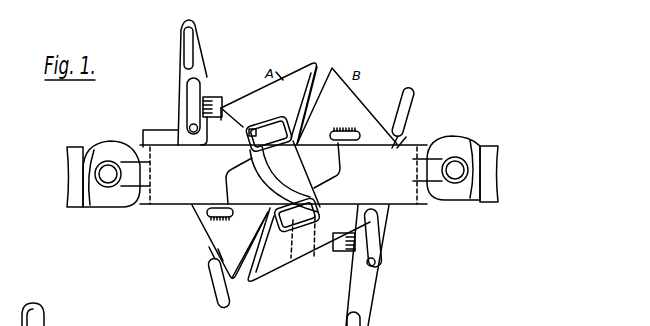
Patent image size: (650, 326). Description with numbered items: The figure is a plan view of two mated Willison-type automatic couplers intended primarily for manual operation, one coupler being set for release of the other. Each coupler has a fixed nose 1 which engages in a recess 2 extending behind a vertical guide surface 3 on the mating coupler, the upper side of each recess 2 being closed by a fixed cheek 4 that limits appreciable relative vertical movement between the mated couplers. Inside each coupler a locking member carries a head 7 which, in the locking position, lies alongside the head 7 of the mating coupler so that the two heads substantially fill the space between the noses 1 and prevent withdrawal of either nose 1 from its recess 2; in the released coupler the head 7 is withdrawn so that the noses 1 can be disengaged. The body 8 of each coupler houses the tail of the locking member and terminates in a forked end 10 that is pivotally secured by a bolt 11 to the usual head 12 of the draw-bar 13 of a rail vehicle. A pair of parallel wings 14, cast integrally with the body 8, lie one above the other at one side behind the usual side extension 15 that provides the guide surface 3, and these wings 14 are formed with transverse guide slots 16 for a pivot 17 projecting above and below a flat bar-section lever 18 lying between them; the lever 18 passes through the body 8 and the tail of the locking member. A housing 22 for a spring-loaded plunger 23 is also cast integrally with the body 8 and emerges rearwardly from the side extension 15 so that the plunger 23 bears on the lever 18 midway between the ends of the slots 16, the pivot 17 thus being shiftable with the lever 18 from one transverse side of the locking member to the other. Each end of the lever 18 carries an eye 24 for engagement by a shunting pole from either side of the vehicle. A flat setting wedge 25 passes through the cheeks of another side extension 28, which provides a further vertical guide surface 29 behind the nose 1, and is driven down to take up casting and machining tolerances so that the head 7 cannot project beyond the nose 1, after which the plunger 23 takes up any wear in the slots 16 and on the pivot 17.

The fixed nose 1 is at (258, 122).
The recess 2 is at (244, 129).
The vertical guide surface 3 is at (321, 70).
The fixed cheek 4 is at (291, 138).
The head 7 is at (293, 180).
The body 8 is at (405, 150).
The forked end 10 is at (125, 206).
The bolt 11 is at (100, 200).
The head 12 is at (138, 144).
The draw-bar 13 is at (78, 152).
The wings 14 is at (183, 139).
The side extension 15 is at (294, 80).
The guide slots 16 is at (200, 89).
The pivot 17 is at (189, 129).
The lever 18 is at (208, 250).
The housing 22 is at (220, 99).
The spring-loaded plunger 23 is at (207, 108).
The eye 24 is at (183, 34).
The setting wedge 25 is at (361, 135).
The side extension 28 is at (345, 106).
The vertical guide surface 29 is at (302, 120).